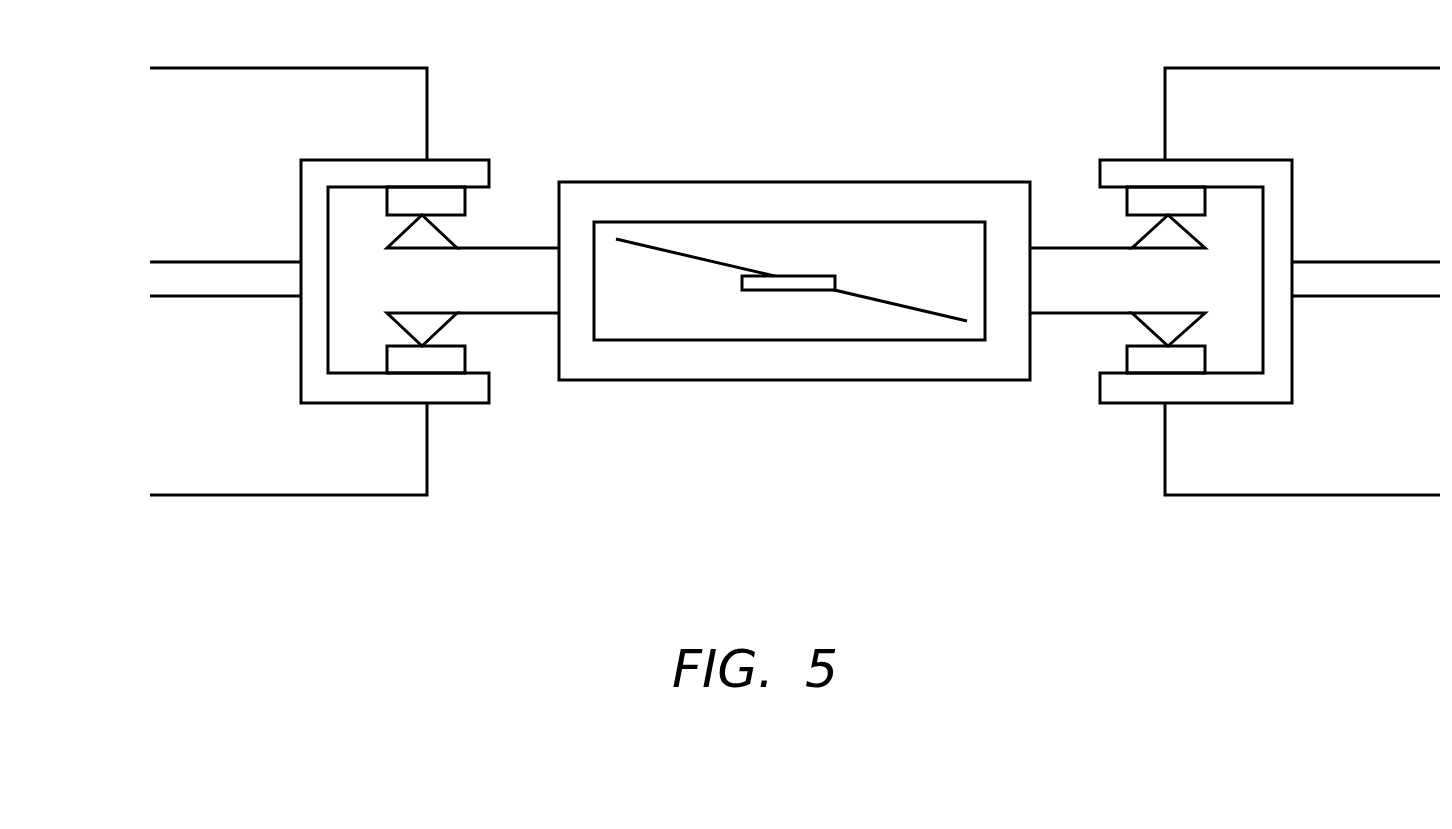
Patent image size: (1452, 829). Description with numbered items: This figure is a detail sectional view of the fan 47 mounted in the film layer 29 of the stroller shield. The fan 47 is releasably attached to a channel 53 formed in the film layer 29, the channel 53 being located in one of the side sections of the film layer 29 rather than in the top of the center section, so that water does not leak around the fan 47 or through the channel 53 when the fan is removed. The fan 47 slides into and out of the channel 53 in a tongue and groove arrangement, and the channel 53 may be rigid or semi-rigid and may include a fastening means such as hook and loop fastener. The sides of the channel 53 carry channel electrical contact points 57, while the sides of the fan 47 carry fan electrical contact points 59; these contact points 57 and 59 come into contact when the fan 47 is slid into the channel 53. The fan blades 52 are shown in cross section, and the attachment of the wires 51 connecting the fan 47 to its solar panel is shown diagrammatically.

The film layer 29 is at (256, 285).
The fan 47 is at (937, 382).
The wires 51 is at (428, 85).
The fan blades 52 is at (662, 253).
The channel 53 is at (316, 268).
The channel electrical contact points 57 is at (393, 203).
The fan electrical contact points 59 is at (433, 248).